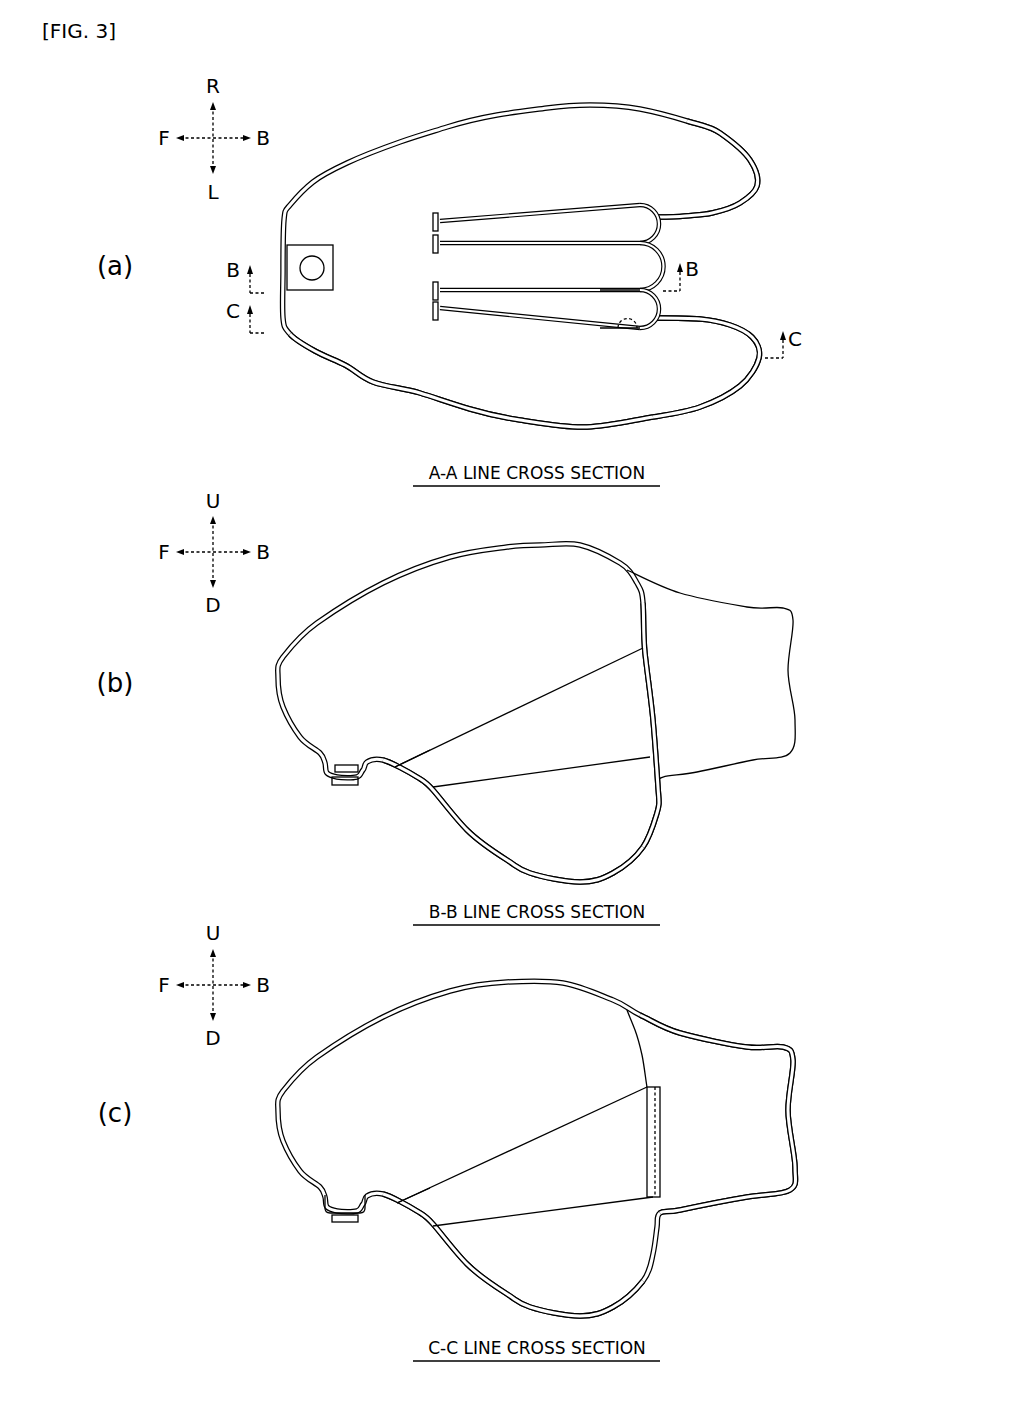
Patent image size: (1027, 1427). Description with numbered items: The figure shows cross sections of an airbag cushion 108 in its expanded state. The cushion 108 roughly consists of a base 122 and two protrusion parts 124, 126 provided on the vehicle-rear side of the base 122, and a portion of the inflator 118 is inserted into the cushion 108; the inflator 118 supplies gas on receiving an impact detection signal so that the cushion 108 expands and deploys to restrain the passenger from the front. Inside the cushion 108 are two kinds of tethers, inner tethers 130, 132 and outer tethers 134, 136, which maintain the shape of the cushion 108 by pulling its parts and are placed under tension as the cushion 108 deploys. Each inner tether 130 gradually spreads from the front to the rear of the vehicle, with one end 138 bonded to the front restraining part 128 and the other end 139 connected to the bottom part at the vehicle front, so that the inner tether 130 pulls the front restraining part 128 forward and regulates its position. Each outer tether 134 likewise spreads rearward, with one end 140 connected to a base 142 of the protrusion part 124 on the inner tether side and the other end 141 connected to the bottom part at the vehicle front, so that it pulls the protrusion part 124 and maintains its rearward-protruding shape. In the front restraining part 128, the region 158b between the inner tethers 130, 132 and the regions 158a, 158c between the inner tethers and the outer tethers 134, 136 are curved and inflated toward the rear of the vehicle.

The cushion 108 is at (400, 142).
The inflator 118 is at (300, 265).
The base 122 is at (380, 388).
The protrusion part 124 is at (747, 328).
The protrusion part 126 is at (747, 204).
The front restraining part 128 is at (673, 318).
The inner tether 130 is at (500, 300).
The inner tether 132 is at (497, 237).
The outer tether 134 is at (548, 324).
The outer tether 136 is at (577, 206).
The one end of inner tether 138 is at (650, 300).
The other end of inner tether 139 is at (427, 763).
The one end of outer tether 140 is at (650, 326).
The other end of outer tether 141 is at (427, 1197).
The base of protrusion part 142 is at (627, 316).
The region 158a is at (660, 307).
The region 158b is at (660, 253).
The region 158c is at (660, 222).